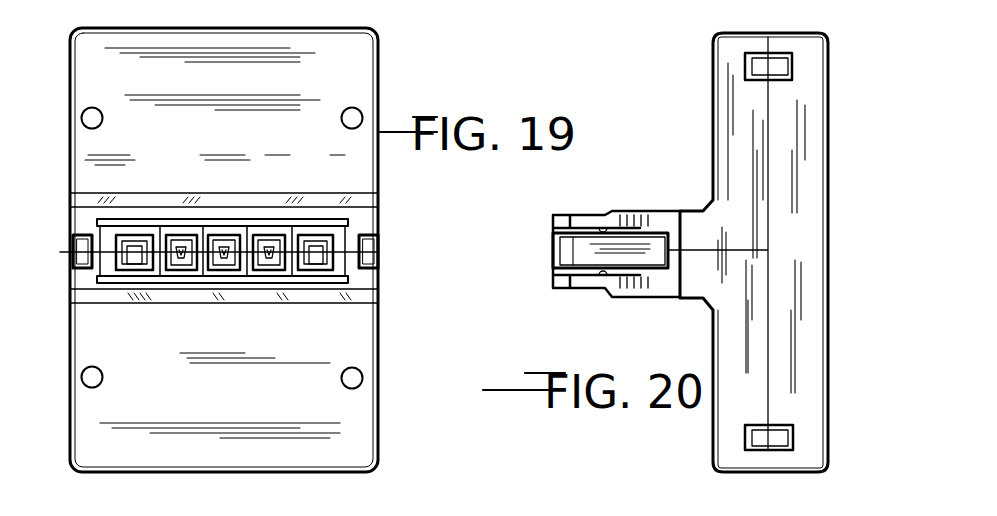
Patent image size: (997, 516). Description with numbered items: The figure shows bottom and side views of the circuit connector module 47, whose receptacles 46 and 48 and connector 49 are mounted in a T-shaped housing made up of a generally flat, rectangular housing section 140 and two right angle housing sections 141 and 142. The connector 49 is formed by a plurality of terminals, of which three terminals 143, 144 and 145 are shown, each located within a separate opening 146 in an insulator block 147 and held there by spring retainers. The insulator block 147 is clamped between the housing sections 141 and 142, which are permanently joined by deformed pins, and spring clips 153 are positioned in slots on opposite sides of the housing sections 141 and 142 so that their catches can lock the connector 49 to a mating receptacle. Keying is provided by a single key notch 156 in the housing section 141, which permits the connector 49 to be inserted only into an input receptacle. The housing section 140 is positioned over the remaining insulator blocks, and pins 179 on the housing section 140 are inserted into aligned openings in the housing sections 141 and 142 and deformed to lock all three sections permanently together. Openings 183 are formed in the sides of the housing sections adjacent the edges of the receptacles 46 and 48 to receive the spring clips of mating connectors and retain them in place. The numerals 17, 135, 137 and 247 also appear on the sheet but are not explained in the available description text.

In FIG. 19, the housing 17 is at (191, 7).
In FIG. 19, the receptacle 46 is at (316, 482).
In FIG. 20, the receptacle 46 is at (802, 484).
In FIG. 20, the circuit connector module 47 is at (703, 80).
In FIG. 19, the receptacle 48 is at (345, 24).
In FIG. 20, the receptacle 48 is at (732, 24).
In FIG. 19, the connector 49 is at (345, 233).
In FIG. 20, the connector 49 is at (545, 240).
In FIG. 19, the lead 135 is at (533, 2).
In FIG. 19, the lead 137 is at (540, 3).
In FIG. 20, the housing section 140 is at (828, 178).
In FIG. 19, the housing section 141 is at (380, 154).
In FIG. 20, the housing section 141 is at (712, 129).
In FIG. 19, the housing section 142 is at (380, 433).
In FIG. 20, the housing section 142 is at (712, 433).
In FIG. 19, the terminal 143 is at (173, 290).
In FIG. 19, the terminal 144 is at (207, 290).
In FIG. 19, the terminal 145 is at (270, 285).
In FIG. 19, the opening 146 is at (221, 237).
In FIG. 19, the insulator block 147 is at (225, 258).
In FIG. 19, the spring clip 153 is at (73, 252).
In FIG. 20, the spring clip 153 is at (622, 232).
In FIG. 19, the key notch 156 is at (240, 230).
In FIG. 20, the key notch 156 is at (652, 510).
In FIG. 19, the pin 179 is at (343, 111).
In FIG. 20, the opening 183 is at (776, 58).
In FIG. 19, the edge 247 is at (382, 71).